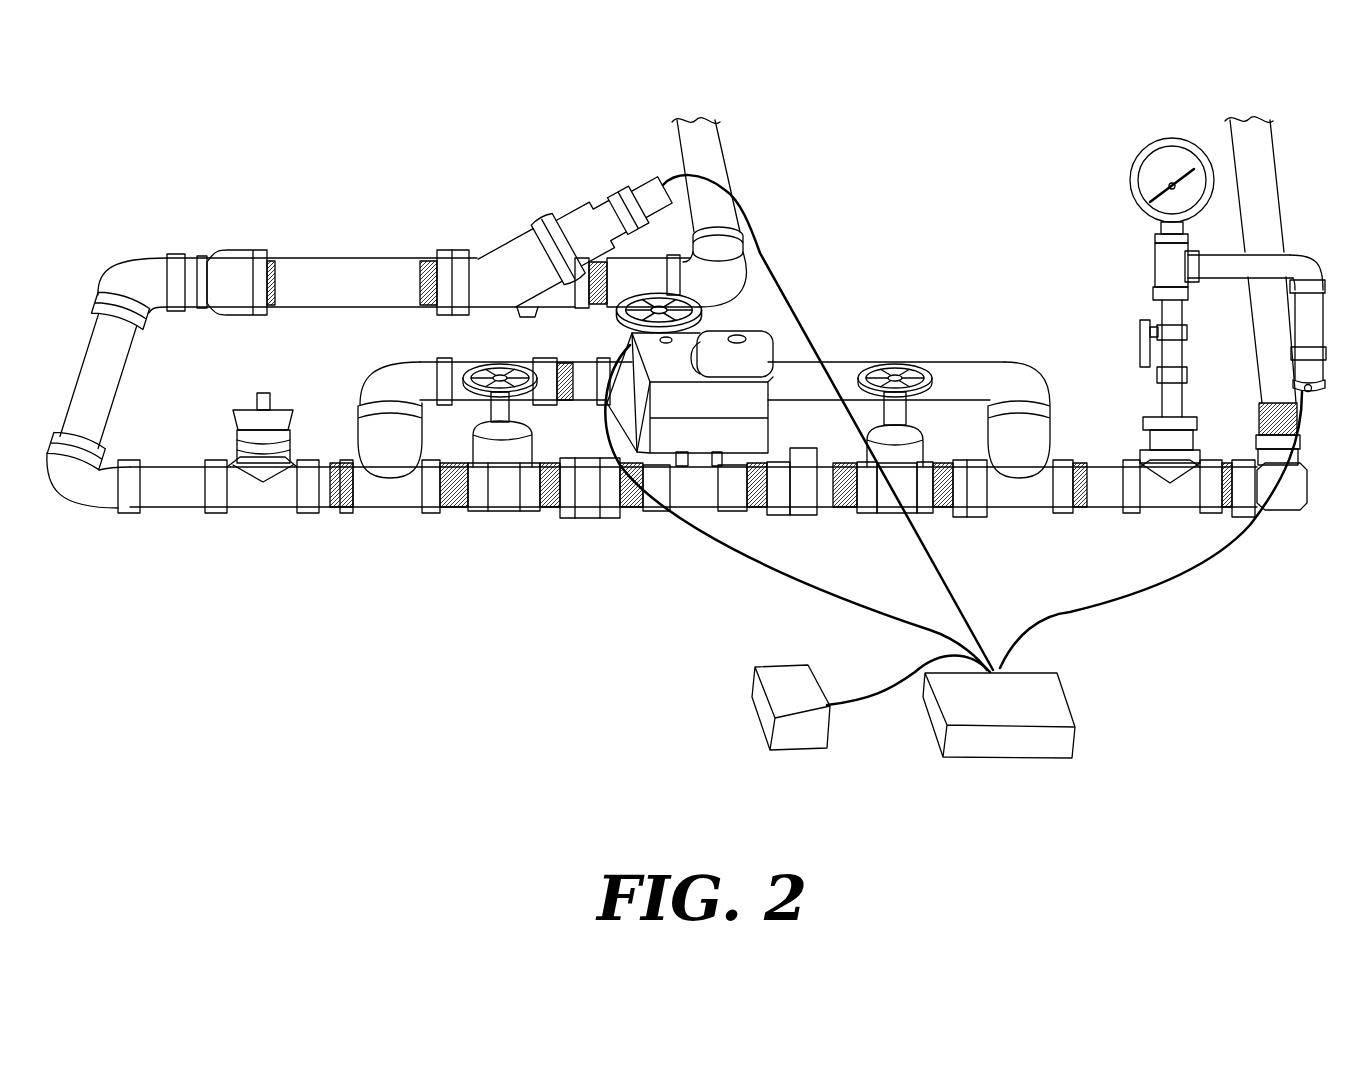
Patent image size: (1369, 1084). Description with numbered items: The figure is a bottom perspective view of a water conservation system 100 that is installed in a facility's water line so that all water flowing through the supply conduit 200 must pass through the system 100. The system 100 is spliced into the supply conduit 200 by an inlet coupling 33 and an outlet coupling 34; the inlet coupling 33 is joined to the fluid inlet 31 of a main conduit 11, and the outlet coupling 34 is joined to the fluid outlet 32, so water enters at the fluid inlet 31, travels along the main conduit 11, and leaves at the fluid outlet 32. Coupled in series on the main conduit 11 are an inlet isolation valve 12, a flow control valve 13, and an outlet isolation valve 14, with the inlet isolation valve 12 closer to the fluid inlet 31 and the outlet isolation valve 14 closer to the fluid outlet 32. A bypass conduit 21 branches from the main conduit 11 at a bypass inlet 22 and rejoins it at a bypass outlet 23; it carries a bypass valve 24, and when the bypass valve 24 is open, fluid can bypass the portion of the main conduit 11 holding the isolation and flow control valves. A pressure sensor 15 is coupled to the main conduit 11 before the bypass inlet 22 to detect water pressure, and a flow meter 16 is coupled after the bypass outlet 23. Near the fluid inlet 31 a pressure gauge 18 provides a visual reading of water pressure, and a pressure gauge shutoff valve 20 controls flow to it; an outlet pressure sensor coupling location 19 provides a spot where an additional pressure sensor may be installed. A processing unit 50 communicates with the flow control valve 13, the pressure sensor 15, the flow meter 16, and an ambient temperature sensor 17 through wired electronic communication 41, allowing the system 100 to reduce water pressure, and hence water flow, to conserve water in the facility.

The water conservation system 100 is at (245, 128).
The main conduit 11 is at (630, 553).
The inlet isolation valve 12 is at (897, 483).
The flow control valve 13 is at (743, 432).
The outlet isolation valve 14 is at (497, 487).
The pressure sensor 15 is at (1308, 370).
The flow meter 16 is at (533, 236).
The ambient temperature sensor 17 is at (800, 737).
The pressure gauge 18 is at (1137, 187).
The outlet pressure sensor coupling location 19 is at (253, 440).
The pressure gauge shutoff valve 20 is at (1147, 333).
The bypass conduit 21 is at (833, 378).
The bypass inlet 22 is at (1017, 457).
The bypass outlet 23 is at (387, 455).
The bypass valve 24 is at (623, 317).
The fluid inlet 31 is at (1103, 480).
The fluid outlet 32 is at (622, 287).
The inlet coupling 33 is at (1290, 487).
The outlet coupling 34 is at (727, 273).
The wired electronic communication 41 is at (795, 583).
The processing unit 50 is at (1000, 740).
The supply conduit 200 is at (708, 167).